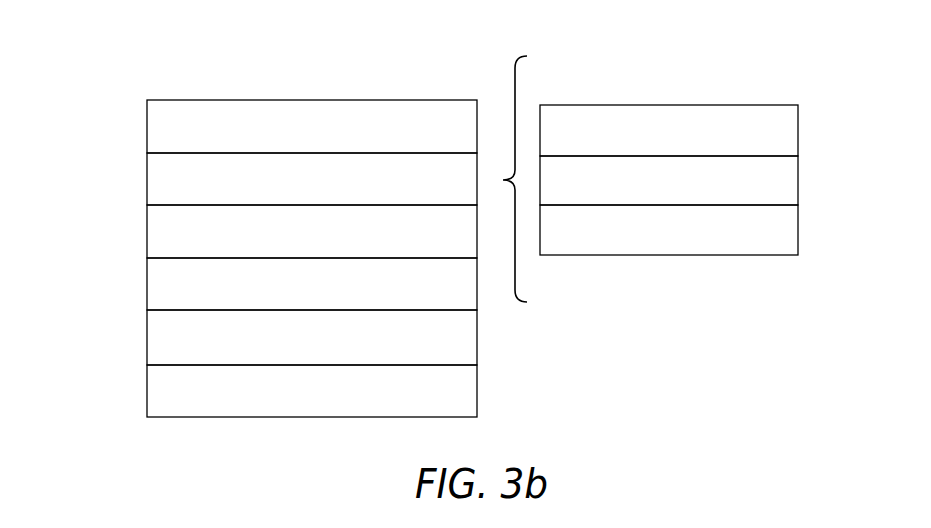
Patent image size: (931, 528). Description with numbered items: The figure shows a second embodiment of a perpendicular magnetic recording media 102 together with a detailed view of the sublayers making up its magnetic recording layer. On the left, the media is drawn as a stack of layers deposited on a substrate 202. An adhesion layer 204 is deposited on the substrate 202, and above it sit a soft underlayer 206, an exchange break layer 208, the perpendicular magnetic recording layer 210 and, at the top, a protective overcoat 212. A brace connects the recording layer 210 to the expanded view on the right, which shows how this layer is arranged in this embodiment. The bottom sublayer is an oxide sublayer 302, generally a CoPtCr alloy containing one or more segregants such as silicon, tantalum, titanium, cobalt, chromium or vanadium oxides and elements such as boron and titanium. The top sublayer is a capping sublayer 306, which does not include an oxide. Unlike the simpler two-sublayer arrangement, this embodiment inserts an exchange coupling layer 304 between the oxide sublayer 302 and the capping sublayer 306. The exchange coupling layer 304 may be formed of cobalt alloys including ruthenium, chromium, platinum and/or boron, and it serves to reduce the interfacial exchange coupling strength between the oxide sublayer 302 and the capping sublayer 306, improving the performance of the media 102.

The perpendicular magnetic recording media 102 is at (132, 69).
The substrate 202 is at (147, 398).
The adhesion layer 204 is at (147, 345).
The soft underlayer 206 is at (147, 292).
The exchange break layer 208 is at (147, 240).
The perpendicular magnetic recording layer 210 is at (147, 186).
The overcoat 212 is at (147, 134).
The oxide sublayer 302 is at (798, 242).
The exchange coupling layer 304 is at (798, 191).
The capping sublayer 306 is at (798, 142).